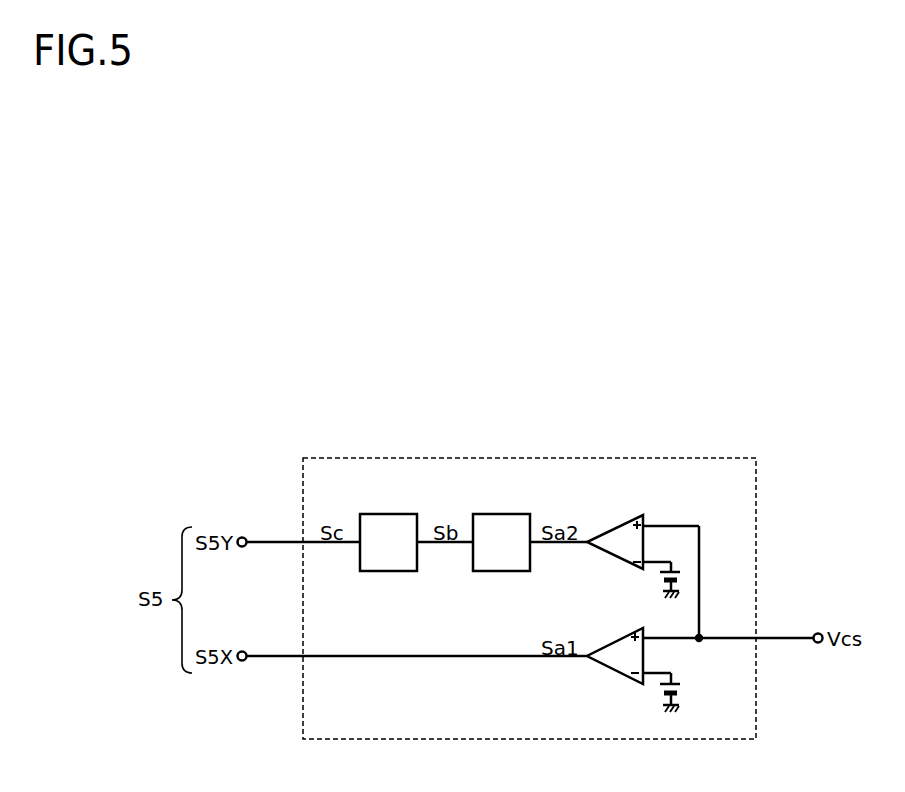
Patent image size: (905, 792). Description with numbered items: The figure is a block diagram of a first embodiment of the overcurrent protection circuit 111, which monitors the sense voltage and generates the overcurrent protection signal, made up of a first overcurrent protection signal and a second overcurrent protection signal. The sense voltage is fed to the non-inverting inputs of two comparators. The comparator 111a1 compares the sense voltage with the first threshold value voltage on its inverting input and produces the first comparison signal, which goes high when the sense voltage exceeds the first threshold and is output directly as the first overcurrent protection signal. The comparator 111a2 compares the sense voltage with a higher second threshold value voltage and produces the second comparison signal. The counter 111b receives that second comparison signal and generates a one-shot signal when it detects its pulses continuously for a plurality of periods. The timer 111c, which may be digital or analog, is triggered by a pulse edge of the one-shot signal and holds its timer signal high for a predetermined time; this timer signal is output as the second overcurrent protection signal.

The overcurrent protection circuit 111 is at (529, 459).
The comparator 111a1 is at (611, 633).
The comparator 111a2 is at (613, 520).
The counter 111b is at (502, 515).
The timer 111c is at (389, 515).